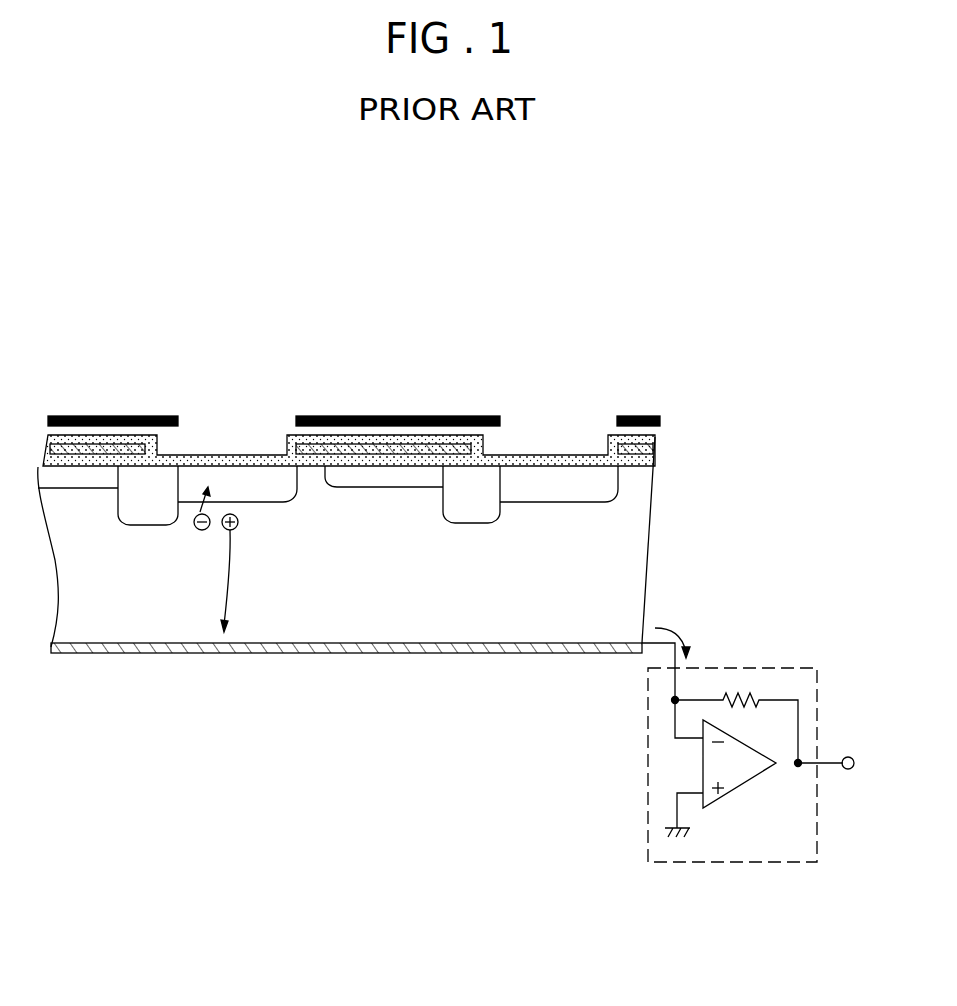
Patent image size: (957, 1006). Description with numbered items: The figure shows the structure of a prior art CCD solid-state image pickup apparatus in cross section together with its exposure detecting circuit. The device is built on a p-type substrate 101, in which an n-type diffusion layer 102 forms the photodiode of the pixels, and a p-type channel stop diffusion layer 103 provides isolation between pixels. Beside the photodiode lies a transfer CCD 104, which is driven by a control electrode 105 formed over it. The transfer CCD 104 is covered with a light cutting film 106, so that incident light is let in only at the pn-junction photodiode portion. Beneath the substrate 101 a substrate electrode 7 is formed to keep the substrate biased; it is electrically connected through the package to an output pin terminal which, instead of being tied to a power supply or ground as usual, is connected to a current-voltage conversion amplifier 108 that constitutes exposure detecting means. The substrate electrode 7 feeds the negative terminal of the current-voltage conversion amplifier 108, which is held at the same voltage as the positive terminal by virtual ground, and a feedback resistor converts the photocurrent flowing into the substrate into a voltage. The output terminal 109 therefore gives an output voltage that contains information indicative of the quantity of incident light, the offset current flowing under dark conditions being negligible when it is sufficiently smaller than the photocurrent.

The p-type substrate 101 is at (640, 550).
The n-type diffusion layer 102 is at (283, 495).
The p-type channel stop diffusion layer 103 is at (125, 515).
The transfer CCD 104 is at (365, 477).
The control electrode 105 is at (73, 440).
The light cutting film 106 is at (140, 415).
The back electrode 7 is at (318, 653).
The current-voltage conversion amplifier 108 is at (648, 760).
The output terminal 109 is at (848, 757).